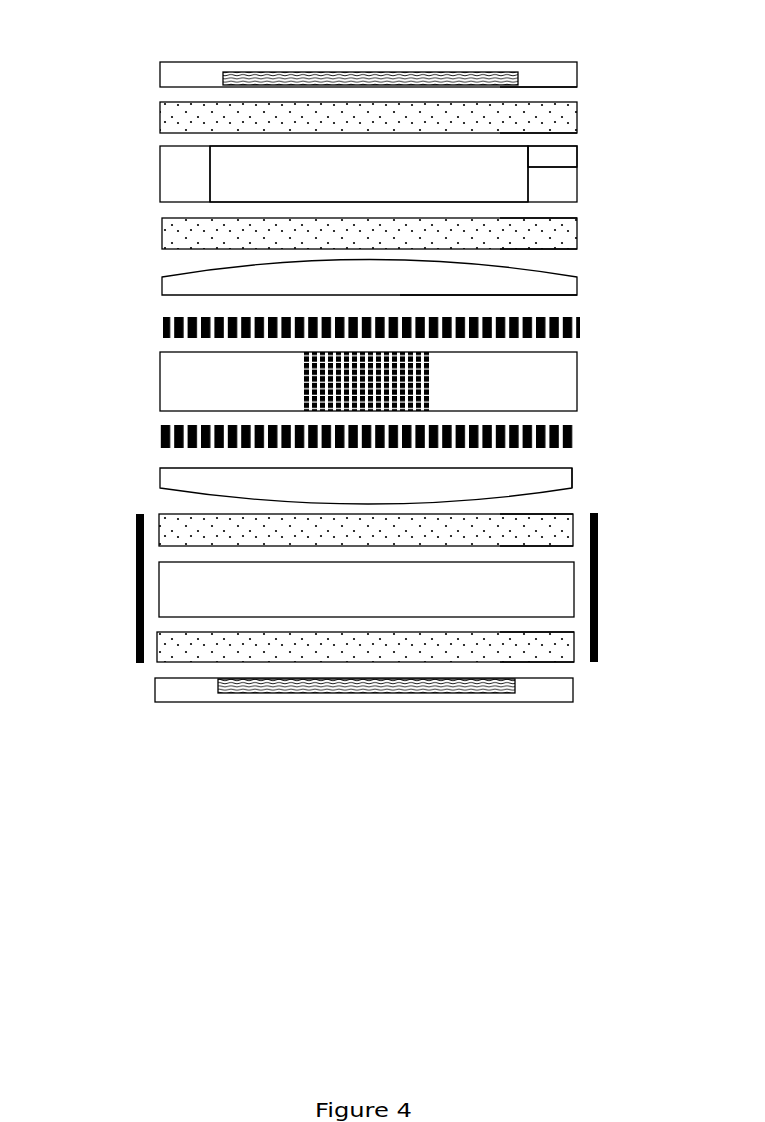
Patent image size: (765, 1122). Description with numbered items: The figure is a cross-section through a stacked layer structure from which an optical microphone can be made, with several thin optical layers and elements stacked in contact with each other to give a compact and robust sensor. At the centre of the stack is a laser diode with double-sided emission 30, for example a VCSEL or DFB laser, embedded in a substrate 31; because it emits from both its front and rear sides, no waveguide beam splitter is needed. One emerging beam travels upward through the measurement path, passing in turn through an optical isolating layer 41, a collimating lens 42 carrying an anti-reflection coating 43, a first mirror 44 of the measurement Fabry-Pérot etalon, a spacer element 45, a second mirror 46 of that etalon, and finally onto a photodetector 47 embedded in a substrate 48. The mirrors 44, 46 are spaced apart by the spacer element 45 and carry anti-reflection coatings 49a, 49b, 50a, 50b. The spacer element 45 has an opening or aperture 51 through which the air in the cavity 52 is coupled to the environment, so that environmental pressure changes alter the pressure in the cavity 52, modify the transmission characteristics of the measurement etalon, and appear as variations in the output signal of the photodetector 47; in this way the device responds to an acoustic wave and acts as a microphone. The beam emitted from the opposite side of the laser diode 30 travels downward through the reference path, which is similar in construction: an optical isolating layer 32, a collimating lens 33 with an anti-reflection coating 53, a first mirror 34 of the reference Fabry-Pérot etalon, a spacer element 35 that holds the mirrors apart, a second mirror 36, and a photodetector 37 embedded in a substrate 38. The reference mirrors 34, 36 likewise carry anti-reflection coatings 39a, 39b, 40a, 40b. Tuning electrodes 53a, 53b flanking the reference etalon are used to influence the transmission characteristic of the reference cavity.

The laser diode with double-sided emission 30 is at (335, 383).
The substrate 31 is at (563, 386).
The optical isolating layer 32 is at (162, 447).
The collimating lens 33 is at (176, 478).
The first mirror 34 is at (167, 527).
The spacer element 35 is at (168, 583).
The second mirror 36 is at (167, 642).
The photodetector 37 is at (404, 685).
The substrate 38 is at (171, 693).
The anti-reflection coating 39a is at (561, 514).
The anti-reflection coating 39b is at (561, 544).
The anti-reflection coating 40a is at (557, 631).
The anti-reflection coating 40b is at (565, 663).
The optical isolating layer 41 is at (165, 330).
The collimating lens 42 is at (180, 285).
The anti-reflection coating 43 is at (563, 275).
The first mirror 44 is at (170, 238).
The spacer element 45 is at (173, 180).
The second mirror 46 is at (171, 122).
The photodetector 47 is at (408, 78).
The substrate 48 is at (175, 71).
The anti-reflection coating 49a is at (566, 248).
The anti-reflection coating 49b is at (565, 218).
The anti-reflection coating 50a is at (562, 132).
The anti-reflection coating 50b is at (568, 100).
The opening or aperture 51 is at (566, 156).
The cavity 52 is at (507, 180).
The anti-reflection coating 53 is at (558, 488).
The tuning electrode 53a is at (136, 586).
The tuning electrode 53b is at (597, 577).